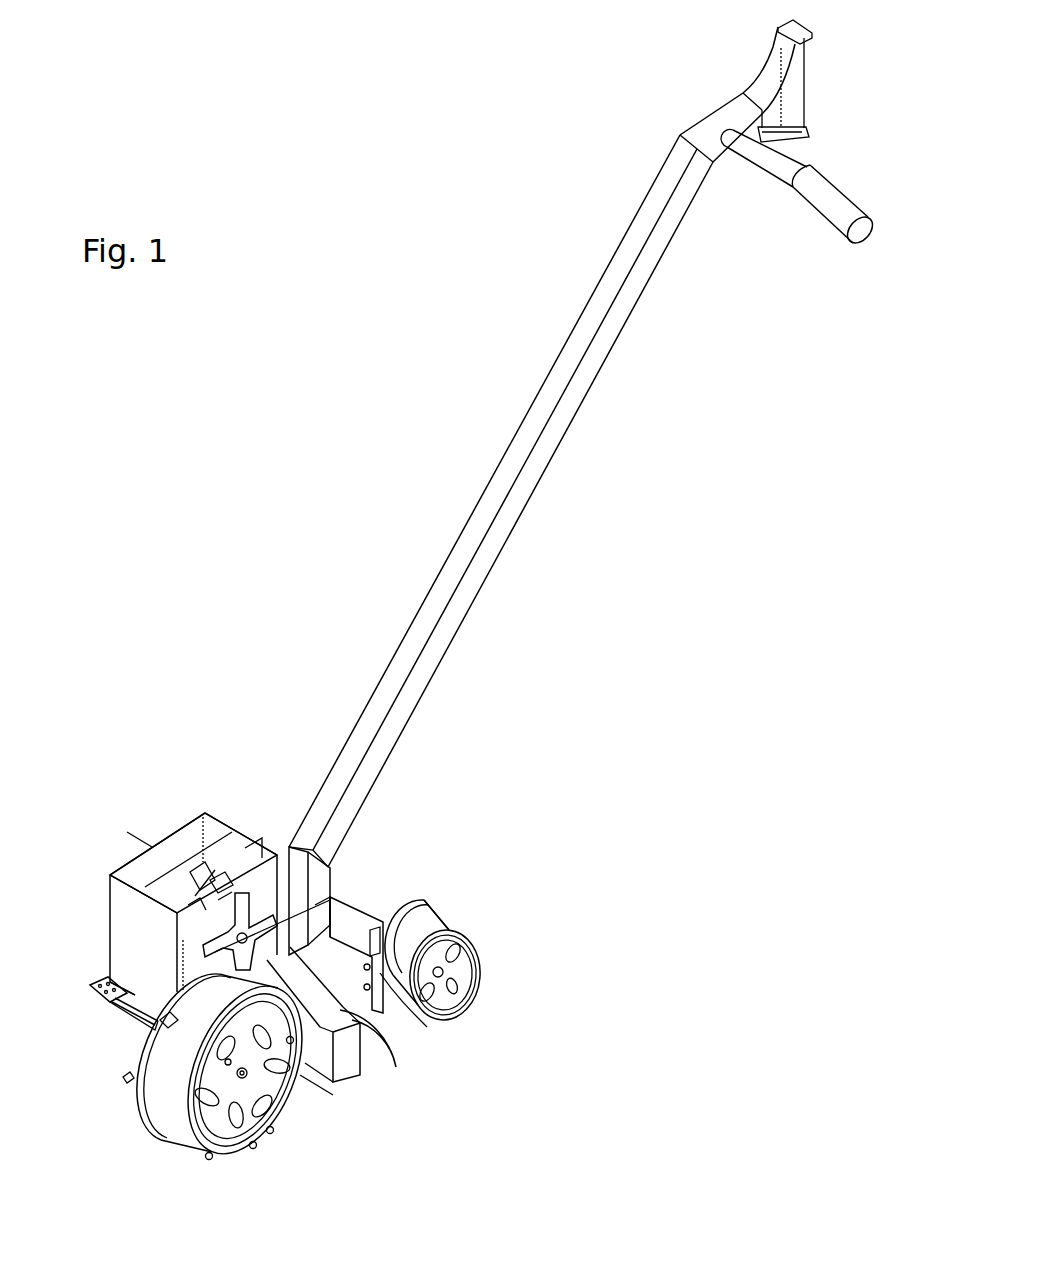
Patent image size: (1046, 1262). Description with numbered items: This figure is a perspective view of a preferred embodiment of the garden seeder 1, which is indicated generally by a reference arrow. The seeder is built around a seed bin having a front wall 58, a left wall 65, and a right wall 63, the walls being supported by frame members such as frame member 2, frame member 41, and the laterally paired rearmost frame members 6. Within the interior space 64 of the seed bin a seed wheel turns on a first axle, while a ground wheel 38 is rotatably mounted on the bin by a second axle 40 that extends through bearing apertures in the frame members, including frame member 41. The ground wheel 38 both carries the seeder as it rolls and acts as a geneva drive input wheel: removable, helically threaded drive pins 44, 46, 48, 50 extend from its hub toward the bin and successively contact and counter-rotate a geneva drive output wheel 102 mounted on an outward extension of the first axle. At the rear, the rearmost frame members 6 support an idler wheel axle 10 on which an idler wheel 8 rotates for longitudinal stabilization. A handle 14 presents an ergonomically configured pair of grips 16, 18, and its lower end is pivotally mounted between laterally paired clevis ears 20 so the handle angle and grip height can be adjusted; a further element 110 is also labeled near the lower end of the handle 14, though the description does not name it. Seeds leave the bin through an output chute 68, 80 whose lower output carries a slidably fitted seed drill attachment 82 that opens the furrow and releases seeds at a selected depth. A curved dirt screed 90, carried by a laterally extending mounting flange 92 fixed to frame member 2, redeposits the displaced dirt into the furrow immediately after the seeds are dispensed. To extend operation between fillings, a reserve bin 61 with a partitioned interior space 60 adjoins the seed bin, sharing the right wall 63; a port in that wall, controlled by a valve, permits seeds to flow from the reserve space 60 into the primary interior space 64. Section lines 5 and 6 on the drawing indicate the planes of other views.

The garden seeder 1 is at (584, 627).
The frame member 2 is at (107, 997).
The section line 5- 5 is at (287, 805).
The rearmost frame member 6 is at (268, 813).
The idler wheel 8 is at (423, 917).
The idler wheel axle 10 is at (460, 998).
The handle 14 is at (543, 412).
The grip 16 is at (773, 50).
The grip 18 is at (820, 198).
The clevis ears 20 is at (337, 892).
The ground wheel 38 is at (167, 1118).
The second axle 40 is at (246, 1078).
The frame member 41 is at (113, 1017).
The drive pin 44 is at (255, 1148).
The drive pin 46 is at (123, 1077).
The drive pin 48 is at (165, 1012).
The drive pin 50 is at (357, 1078).
The front wall 58 is at (120, 968).
The partitioned interior space 60 is at (182, 840).
The reserve bin 61 is at (152, 847).
The right wall 63 is at (225, 822).
The interior space 64 is at (183, 820).
The left wall 65 is at (143, 848).
The output chute 68 is at (338, 862).
The output chute 80 is at (378, 998).
The seed drill attachment 82 is at (323, 1083).
The dirt screed 90 is at (397, 1066).
The mounting flange 92 is at (440, 913).
The geneva drive output wheel 102 is at (305, 822).
The shaft clamp 110 is at (323, 807).